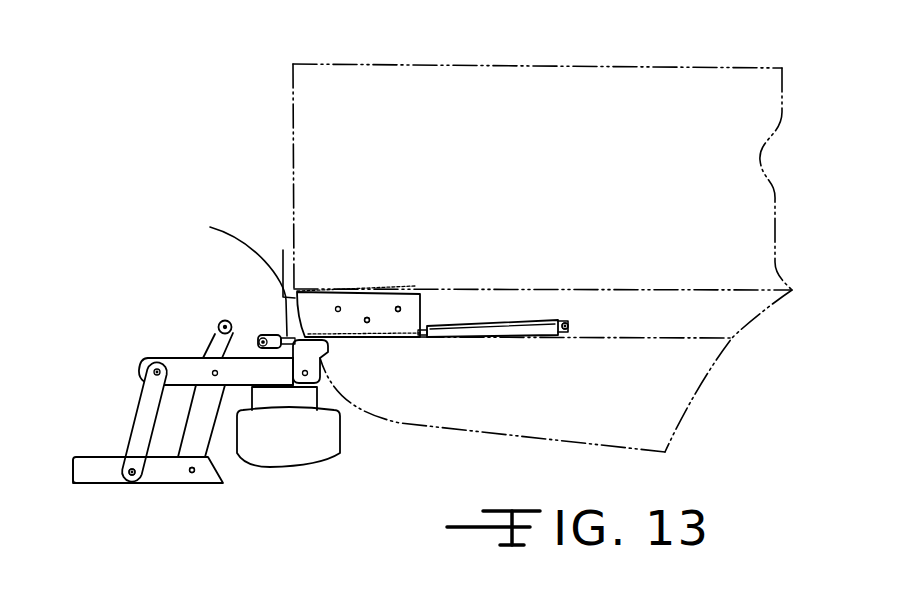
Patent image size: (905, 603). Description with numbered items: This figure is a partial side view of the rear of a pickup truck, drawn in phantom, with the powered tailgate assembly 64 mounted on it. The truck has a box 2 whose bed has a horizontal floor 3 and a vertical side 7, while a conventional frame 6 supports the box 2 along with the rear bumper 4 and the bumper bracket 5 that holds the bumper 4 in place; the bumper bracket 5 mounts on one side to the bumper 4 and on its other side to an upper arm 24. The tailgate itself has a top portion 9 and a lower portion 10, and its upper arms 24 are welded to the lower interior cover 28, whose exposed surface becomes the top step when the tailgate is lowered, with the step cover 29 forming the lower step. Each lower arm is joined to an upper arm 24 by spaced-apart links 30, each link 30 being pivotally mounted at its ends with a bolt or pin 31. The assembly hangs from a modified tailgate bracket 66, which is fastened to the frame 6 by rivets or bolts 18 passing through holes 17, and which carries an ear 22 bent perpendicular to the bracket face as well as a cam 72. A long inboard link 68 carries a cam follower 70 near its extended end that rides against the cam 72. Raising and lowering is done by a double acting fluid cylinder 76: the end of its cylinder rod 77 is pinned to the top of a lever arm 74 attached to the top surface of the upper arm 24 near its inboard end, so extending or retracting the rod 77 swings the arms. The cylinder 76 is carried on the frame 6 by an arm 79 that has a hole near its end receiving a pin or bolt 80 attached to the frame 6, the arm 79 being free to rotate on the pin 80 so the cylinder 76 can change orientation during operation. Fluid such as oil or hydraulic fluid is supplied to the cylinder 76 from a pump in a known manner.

The box 2 is at (453, 65).
The horizontal floor 3 is at (415, 290).
The rear bumper 4 is at (302, 453).
The bumper bracket 5 is at (278, 403).
The frame 6 is at (497, 314).
The vertical side 7 is at (577, 195).
The top portion 9 is at (160, 483).
The lower portion 10 is at (140, 358).
The holes 17 is at (325, 358).
The rivets or bolts 18 is at (369, 322).
The ear 22 is at (322, 353).
The upper arm 24 is at (236, 384).
The lower interior cover 28 is at (170, 358).
The step cover 29 is at (95, 457).
The link 30 is at (138, 417).
The bolt or pin 31 is at (130, 478).
The powered tailgate assembly 64 is at (192, 345).
The modified tailgate bracket 66 is at (360, 305).
The long inboard link 68 is at (207, 432).
The cam follower 70 is at (228, 320).
The cam 72 is at (283, 252).
The lever arm 74 is at (256, 349).
The fluid cylinder 76 is at (495, 332).
The cylinder rod 77 is at (235, 274).
The arm 79 is at (565, 330).
The pin or bolt 80 is at (567, 323).